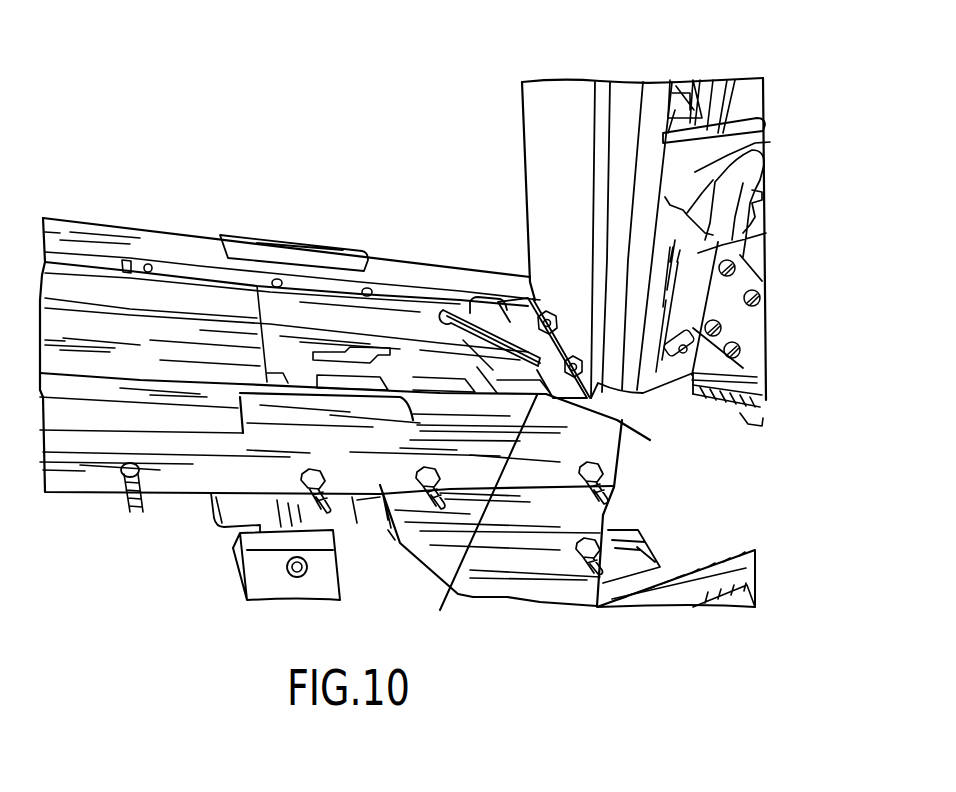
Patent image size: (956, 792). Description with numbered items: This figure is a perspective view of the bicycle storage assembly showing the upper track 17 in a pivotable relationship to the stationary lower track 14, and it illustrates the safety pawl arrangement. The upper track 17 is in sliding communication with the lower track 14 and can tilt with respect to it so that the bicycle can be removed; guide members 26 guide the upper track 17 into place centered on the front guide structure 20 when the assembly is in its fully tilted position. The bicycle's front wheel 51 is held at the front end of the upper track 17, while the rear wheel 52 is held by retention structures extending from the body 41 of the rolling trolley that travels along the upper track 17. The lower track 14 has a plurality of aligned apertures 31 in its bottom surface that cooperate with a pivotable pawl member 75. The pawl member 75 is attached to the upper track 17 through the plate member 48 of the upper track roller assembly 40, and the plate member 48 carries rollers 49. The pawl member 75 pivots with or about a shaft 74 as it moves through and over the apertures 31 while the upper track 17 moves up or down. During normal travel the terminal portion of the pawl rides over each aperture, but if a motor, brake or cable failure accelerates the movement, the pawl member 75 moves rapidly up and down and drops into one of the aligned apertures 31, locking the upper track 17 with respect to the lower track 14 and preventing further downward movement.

The lower track 14 is at (87, 483).
The upper track 17 is at (640, 183).
The front guide structure 20 is at (511, 586).
The guide members 26 is at (643, 553).
The aligned apertures 31 is at (432, 396).
The upper track roller assembly 40 is at (573, 402).
The body 41 is at (673, 283).
The plate member 48 is at (617, 423).
The rollers 49 is at (492, 298).
The front wheel 51 is at (752, 582).
The rear wheel 52 is at (695, 82).
The shaft 74 is at (449, 600).
The pawl member 75 is at (660, 408).